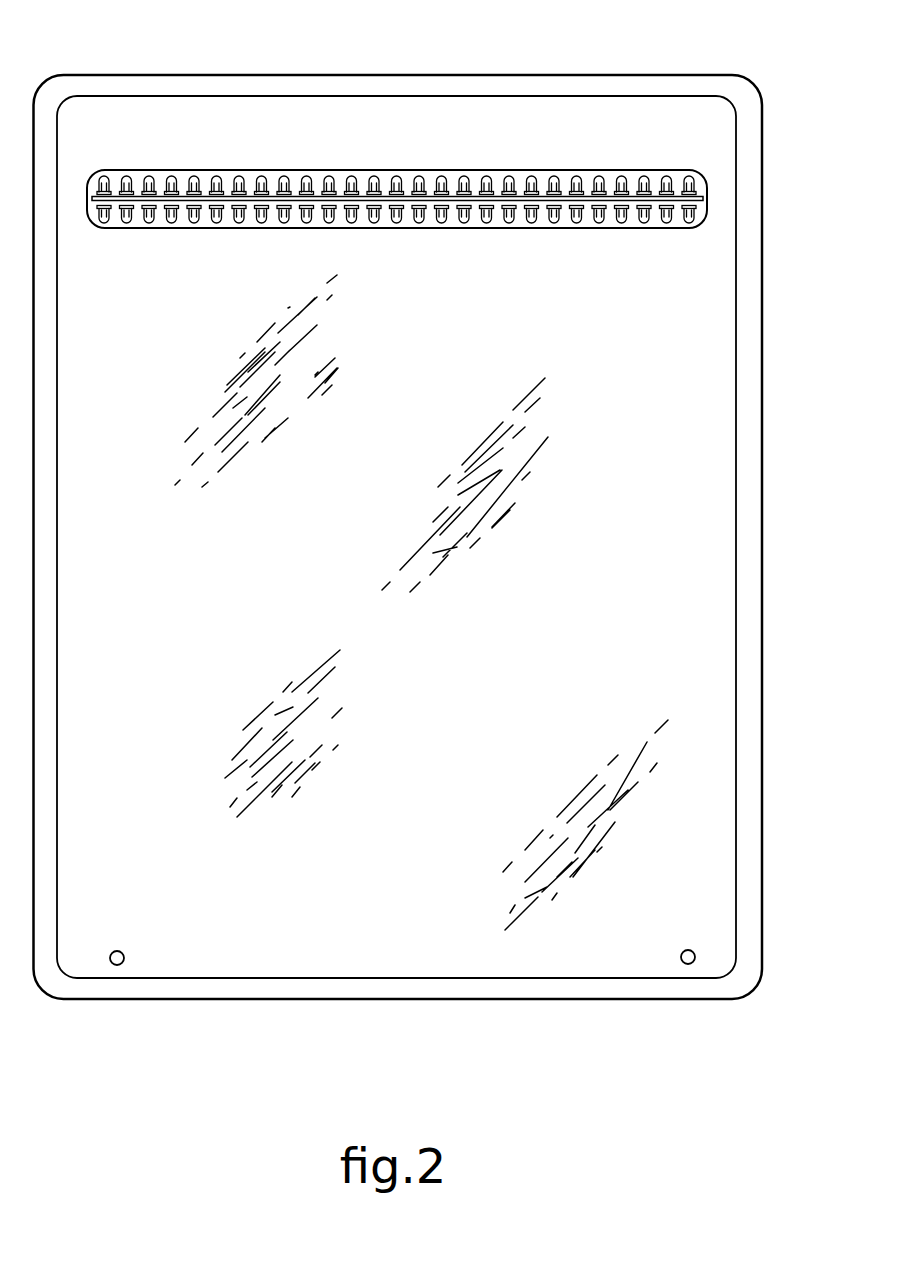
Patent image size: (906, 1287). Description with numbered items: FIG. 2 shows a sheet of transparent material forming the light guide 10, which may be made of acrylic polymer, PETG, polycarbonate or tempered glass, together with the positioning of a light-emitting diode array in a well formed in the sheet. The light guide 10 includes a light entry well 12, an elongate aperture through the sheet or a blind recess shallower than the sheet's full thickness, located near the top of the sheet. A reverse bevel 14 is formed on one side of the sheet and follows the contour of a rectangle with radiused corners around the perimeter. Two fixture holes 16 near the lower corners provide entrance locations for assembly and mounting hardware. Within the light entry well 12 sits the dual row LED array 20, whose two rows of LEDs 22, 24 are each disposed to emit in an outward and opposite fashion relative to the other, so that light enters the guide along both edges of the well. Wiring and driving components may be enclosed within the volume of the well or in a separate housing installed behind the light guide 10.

The light guide 10 is at (758, 91).
The light entry well 12 is at (418, 170).
The reverse bevel 14 is at (747, 211).
The fixture holes 16 is at (122, 951).
The dual row LED array 20 is at (92, 198).
The upper row of LEDs 22 is at (219, 176).
The lower row of LEDs 24 is at (218, 224).